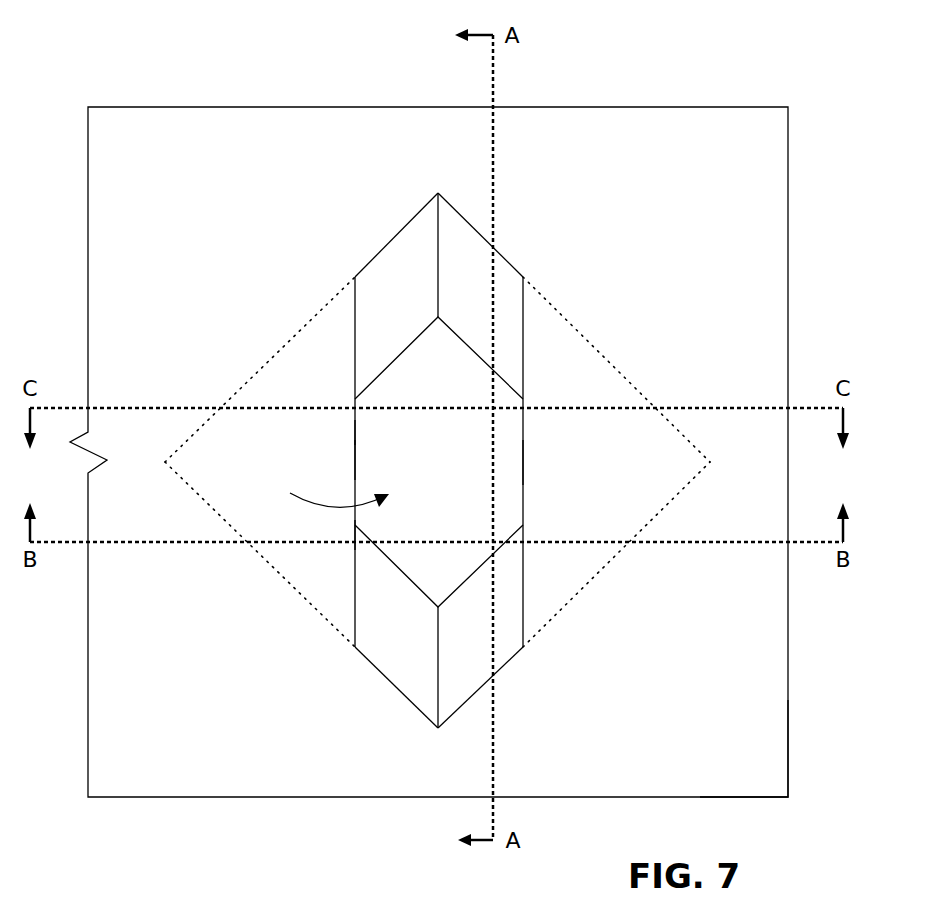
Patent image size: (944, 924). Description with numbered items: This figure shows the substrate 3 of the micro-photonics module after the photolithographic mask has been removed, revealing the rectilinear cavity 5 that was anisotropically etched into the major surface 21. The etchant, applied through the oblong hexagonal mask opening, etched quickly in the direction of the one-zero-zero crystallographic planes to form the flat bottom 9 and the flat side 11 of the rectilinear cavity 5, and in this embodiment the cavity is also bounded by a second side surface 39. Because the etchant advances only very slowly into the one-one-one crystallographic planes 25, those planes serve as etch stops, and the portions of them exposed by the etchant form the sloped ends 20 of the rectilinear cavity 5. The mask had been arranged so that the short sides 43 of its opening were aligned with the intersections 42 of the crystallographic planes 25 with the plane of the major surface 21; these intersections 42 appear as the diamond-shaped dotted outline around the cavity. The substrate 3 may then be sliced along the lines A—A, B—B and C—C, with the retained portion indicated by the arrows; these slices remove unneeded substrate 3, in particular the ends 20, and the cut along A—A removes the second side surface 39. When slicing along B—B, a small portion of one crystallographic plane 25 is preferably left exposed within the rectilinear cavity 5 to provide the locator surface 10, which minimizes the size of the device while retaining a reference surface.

The substrate 3 is at (104, 722).
The rectilinear cavity 5 is at (332, 491).
The flat bottom 9 is at (393, 437).
The locator surface 10 is at (355, 535).
The flat side 11 is at (355, 462).
The ends of the rectilinear cavity 20 is at (368, 322).
The major surface 21 is at (730, 740).
The 111 crystallographic planes 25 is at (407, 283).
The second side surface 39 is at (522, 462).
The intersections 42 is at (313, 315).
The short sides 43 is at (398, 232).